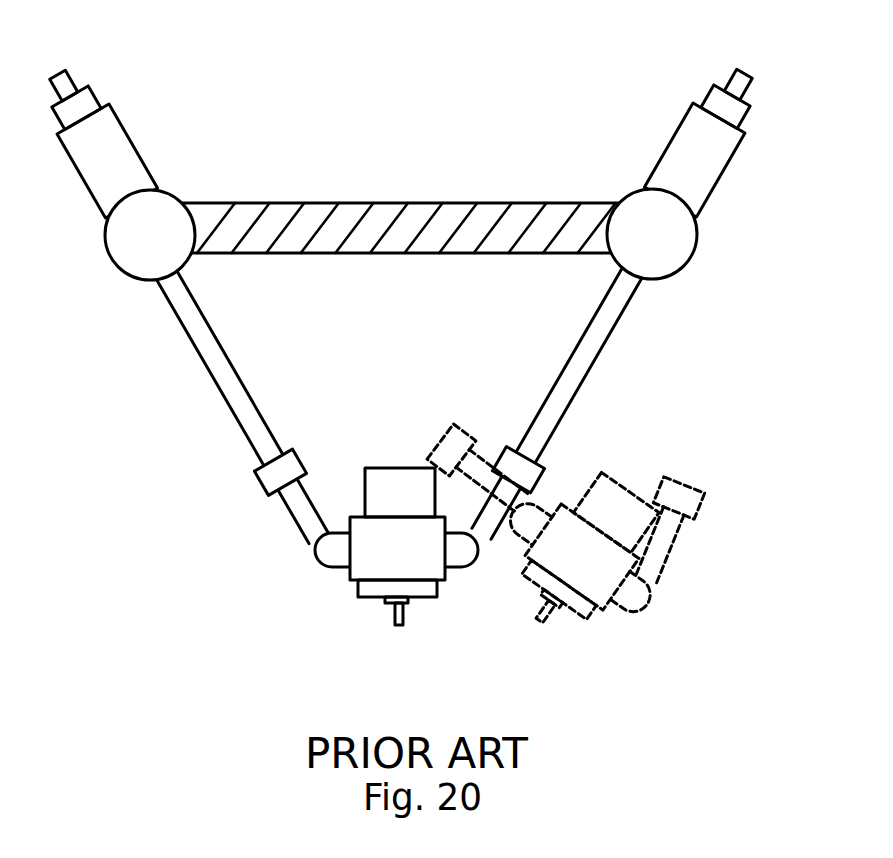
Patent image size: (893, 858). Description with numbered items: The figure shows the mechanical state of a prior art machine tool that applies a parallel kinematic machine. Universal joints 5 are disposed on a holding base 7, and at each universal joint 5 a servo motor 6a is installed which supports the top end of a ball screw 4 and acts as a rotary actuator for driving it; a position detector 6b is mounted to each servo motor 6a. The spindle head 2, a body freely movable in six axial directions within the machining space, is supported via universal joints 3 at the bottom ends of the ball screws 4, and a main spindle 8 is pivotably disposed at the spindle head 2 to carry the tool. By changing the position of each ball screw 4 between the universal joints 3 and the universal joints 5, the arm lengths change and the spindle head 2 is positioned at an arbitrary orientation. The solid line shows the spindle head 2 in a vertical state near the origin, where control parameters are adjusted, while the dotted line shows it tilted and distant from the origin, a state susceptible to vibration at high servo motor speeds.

The spindle head 2 is at (372, 565).
The universal joint 3 is at (320, 553).
The ball screw 4 is at (223, 382).
The universal joint 5 is at (120, 257).
The servo motor 6a is at (102, 153).
The position detector 6b is at (87, 90).
The holding base 7 is at (283, 217).
The main spindle 8 is at (408, 603).